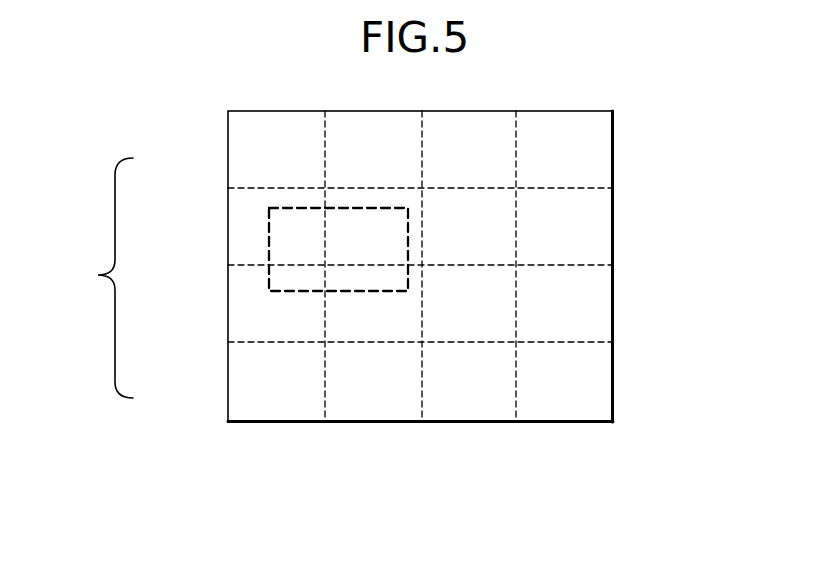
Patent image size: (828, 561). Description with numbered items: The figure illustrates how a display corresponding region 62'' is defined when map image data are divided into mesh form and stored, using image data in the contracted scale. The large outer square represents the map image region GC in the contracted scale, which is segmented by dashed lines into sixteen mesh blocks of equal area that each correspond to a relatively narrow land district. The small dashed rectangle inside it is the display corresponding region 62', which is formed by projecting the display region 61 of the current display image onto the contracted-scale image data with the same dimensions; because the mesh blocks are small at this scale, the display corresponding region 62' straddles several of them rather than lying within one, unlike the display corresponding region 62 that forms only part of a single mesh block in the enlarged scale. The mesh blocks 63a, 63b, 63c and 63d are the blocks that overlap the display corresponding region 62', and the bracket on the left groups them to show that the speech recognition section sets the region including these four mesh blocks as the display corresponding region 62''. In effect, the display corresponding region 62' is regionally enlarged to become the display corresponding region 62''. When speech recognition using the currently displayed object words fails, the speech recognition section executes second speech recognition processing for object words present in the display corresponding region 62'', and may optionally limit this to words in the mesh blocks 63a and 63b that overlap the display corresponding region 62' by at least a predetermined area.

The map image region GC is at (599, 102).
The display corresponding region 62' is at (347, 338).
The display region 61 is at (352, 356).
The display corresponding region 62 is at (352, 373).
The display corresponding region 62'' is at (90, 278).
The mesh block 63a is at (242, 212).
The mesh block 63b is at (343, 237).
The mesh block 63c is at (242, 320).
The mesh block 63d is at (343, 307).